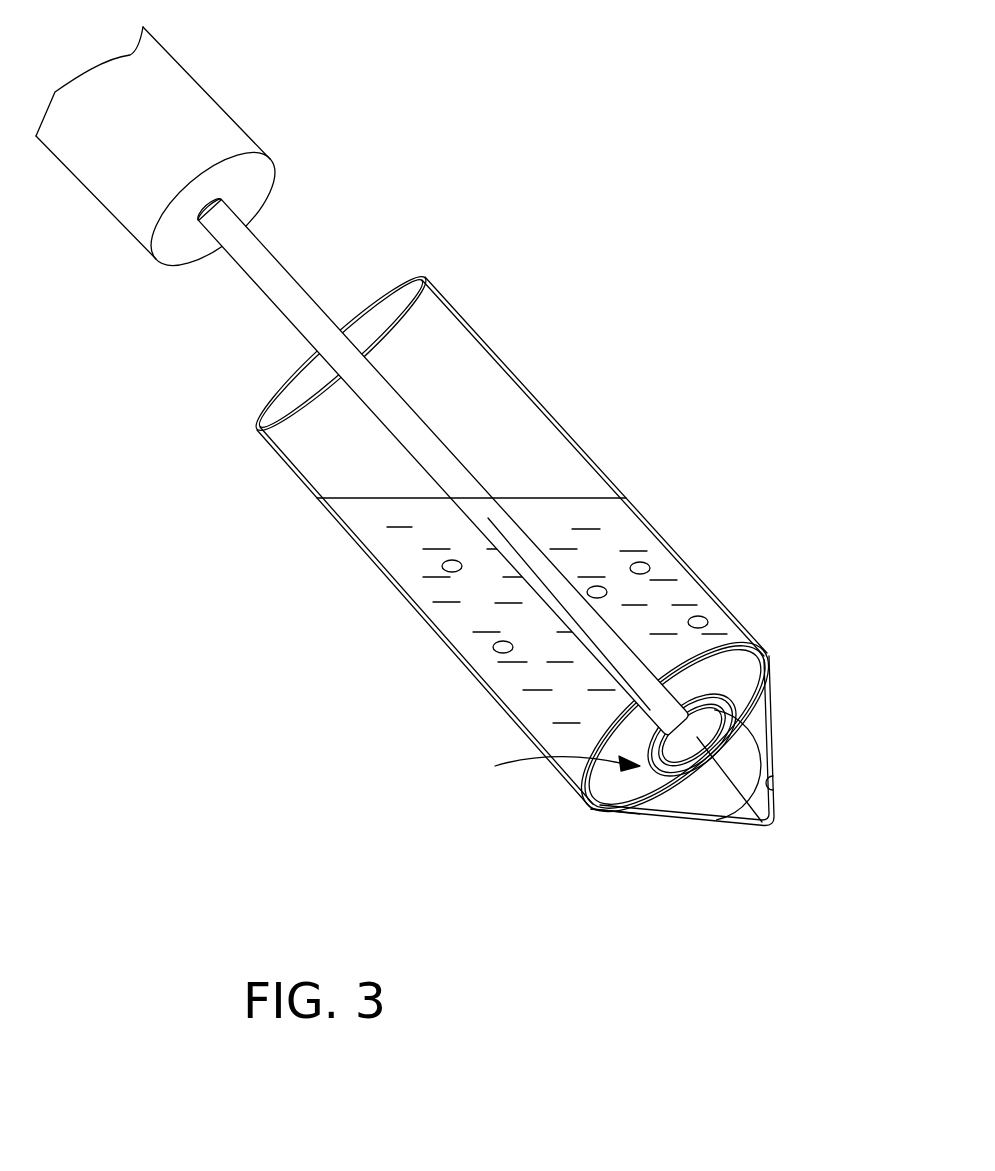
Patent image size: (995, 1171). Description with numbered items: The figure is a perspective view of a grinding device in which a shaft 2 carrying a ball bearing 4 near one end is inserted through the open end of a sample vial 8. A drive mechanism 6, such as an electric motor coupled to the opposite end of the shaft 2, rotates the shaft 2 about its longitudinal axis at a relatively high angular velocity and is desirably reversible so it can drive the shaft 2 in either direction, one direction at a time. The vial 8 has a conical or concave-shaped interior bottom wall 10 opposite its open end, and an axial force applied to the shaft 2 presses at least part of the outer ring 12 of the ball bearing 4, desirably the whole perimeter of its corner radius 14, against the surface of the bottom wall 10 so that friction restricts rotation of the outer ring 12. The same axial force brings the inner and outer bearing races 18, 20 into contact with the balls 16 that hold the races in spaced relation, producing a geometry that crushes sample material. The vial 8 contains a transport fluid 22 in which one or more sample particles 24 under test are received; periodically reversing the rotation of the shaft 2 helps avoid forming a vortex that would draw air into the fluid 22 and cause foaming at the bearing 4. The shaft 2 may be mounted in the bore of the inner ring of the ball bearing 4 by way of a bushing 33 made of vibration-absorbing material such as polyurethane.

The shaft 2 is at (287, 287).
The ball bearing 4 is at (558, 768).
The drive mechanism 6 is at (197, 117).
The sample vial 8 is at (462, 317).
The bottom wall 10 is at (773, 791).
The outer ring 12 is at (752, 762).
The corner radius 14 is at (713, 815).
The balls 16 is at (768, 704).
The inner bearing race 18 is at (623, 813).
The outer bearing race 20 is at (722, 703).
The fluid 22 is at (513, 497).
The sample particle 24 is at (652, 567).
The bushing 33 is at (743, 803).